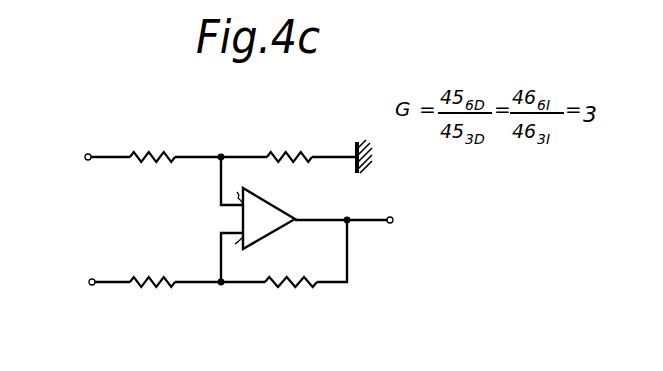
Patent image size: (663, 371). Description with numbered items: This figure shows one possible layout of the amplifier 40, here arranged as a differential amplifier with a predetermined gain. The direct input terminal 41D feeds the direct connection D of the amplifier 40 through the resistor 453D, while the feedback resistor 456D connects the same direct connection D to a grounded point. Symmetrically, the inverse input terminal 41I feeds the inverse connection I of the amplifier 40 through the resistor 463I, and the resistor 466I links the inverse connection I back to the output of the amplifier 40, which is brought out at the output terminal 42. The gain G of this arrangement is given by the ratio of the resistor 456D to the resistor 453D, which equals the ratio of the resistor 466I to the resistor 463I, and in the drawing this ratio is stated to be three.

The amplifier 40 is at (265, 201).
The direct input terminal 41D is at (86, 160).
The inverse input terminal 41I is at (89, 284).
The output terminal 42 is at (393, 219).
The resistor 453D is at (140, 163).
The resistor 456D is at (285, 152).
The resistor 463I is at (140, 287).
The resistor 466I is at (270, 288).